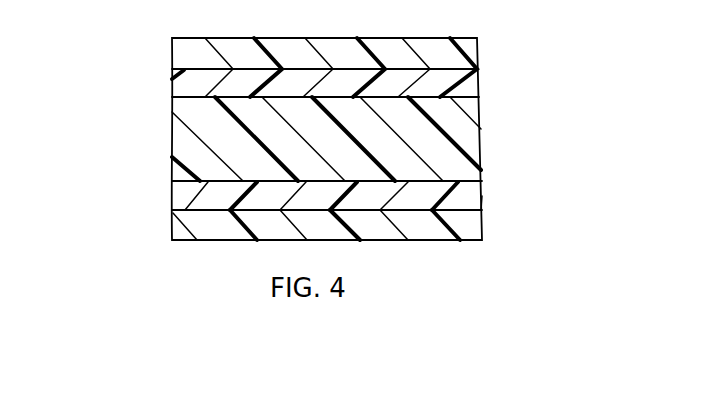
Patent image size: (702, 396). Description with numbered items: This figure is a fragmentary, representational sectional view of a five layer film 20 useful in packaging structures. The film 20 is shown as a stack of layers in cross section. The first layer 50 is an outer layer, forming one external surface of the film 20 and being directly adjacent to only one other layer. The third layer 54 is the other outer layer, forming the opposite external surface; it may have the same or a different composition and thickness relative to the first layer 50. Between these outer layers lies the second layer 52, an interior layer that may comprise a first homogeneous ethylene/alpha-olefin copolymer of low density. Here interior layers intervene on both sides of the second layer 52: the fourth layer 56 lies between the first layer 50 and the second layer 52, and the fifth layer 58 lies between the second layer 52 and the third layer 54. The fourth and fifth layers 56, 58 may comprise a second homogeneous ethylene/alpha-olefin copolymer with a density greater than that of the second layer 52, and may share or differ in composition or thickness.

The film 20 is at (502, 202).
The first layer 50 is at (478, 43).
The fourth layer 56 is at (182, 80).
The second layer 52 is at (187, 137).
The fifth layer 58 is at (172, 203).
The third layer 54 is at (174, 230).